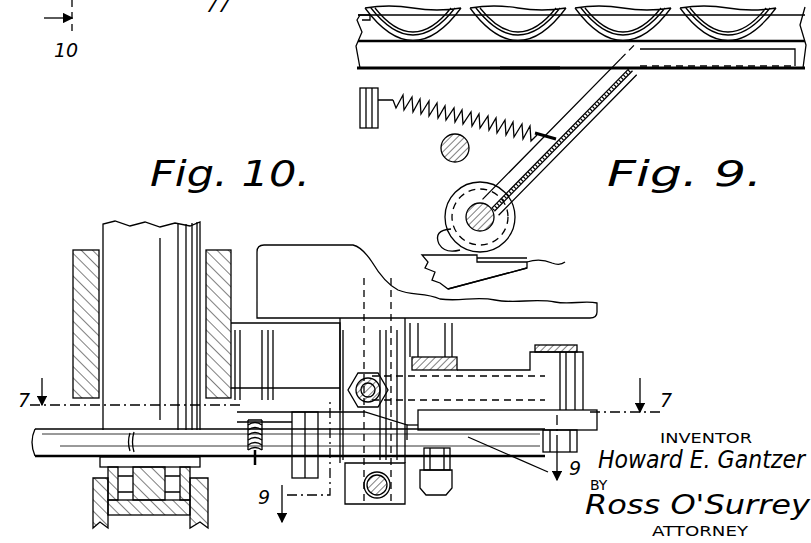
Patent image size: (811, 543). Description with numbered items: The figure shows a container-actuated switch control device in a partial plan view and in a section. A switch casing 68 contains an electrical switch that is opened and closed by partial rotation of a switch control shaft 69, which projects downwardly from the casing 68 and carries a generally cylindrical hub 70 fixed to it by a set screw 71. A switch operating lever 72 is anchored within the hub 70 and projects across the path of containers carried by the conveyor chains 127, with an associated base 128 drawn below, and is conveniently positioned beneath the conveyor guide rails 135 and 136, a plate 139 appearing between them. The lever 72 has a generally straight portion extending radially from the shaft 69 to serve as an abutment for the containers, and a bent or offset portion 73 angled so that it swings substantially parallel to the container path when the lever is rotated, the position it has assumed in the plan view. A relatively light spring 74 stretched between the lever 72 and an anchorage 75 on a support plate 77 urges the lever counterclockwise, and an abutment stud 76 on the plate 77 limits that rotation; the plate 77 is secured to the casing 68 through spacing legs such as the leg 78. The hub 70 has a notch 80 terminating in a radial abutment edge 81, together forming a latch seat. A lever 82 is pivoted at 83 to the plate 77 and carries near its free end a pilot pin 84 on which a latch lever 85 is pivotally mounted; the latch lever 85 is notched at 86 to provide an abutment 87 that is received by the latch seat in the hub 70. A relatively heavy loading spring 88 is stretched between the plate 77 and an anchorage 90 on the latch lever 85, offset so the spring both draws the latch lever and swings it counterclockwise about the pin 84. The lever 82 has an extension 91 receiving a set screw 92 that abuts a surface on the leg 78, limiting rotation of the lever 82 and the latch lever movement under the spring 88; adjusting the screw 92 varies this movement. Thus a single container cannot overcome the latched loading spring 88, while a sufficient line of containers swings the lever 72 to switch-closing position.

In FIG. 10, the switch casing 68 is at (313, 246).
In FIG. 10, the switch control shaft 69 is at (364, 298).
In FIG. 9, the switch control shaft 69 is at (495, 224).
In FIG. 10, the hub 70 is at (350, 497).
In FIG. 9, the hub 70 is at (451, 196).
In FIG. 10, the set screw 71 is at (383, 498).
In FIG. 10, the switch operating lever 72 is at (166, 443).
In FIG. 9, the switch operating lever 72 is at (600, 112).
In FIG. 10, the offset portion 73 is at (64, 428).
In FIG. 9, the offset portion 73 is at (763, 68).
In FIG. 10, the spring 74 is at (247, 442).
In FIG. 9, the spring 74 is at (430, 107).
In FIG. 10, the anchorage 75 is at (284, 418).
In FIG. 9, the anchorage 75 is at (360, 105).
In FIG. 10, the abutment stud 76 is at (305, 440).
In FIG. 9, the abutment stud 76 is at (441, 148).
In FIG. 10, the support plate 77 is at (598, 425).
In FIG. 10, the spacing member 78 is at (346, 340).
In FIG. 9, the notch 80 is at (448, 226).
In FIG. 10, the abutment edge 81 is at (410, 440).
In FIG. 9, the abutment edge 81 is at (446, 247).
In FIG. 10, the lever 82 is at (503, 379).
In FIG. 10, the pivot 83 is at (576, 348).
In FIG. 10, the pilot pin 84 is at (456, 357).
In FIG. 10, the latch lever 85 is at (508, 454).
In FIG. 9, the latch lever 85 is at (466, 278).
In FIG. 9, the notch 86 is at (504, 269).
In FIG. 9, the abutment 87 is at (500, 256).
In FIG. 10, the loading spring 88 is at (452, 486).
In FIG. 10, the anchorage 90 is at (452, 468).
In FIG. 10, the extension 91 is at (390, 392).
In FIG. 10, the set screw 92 is at (432, 402).
In FIG. 10, the conveyor chains 127 is at (100, 463).
In FIG. 9, the conveyor chains 127 is at (358, 20).
In FIG. 10, the base 128 is at (94, 501).
In FIG. 10, the conveyor guide rail 135 is at (75, 250).
In FIG. 10, the conveyor guide rail 136 is at (230, 250).
In FIG. 9, the conveyor guide rail 136 is at (522, 62).
In FIG. 10, the plate 139 is at (151, 227).